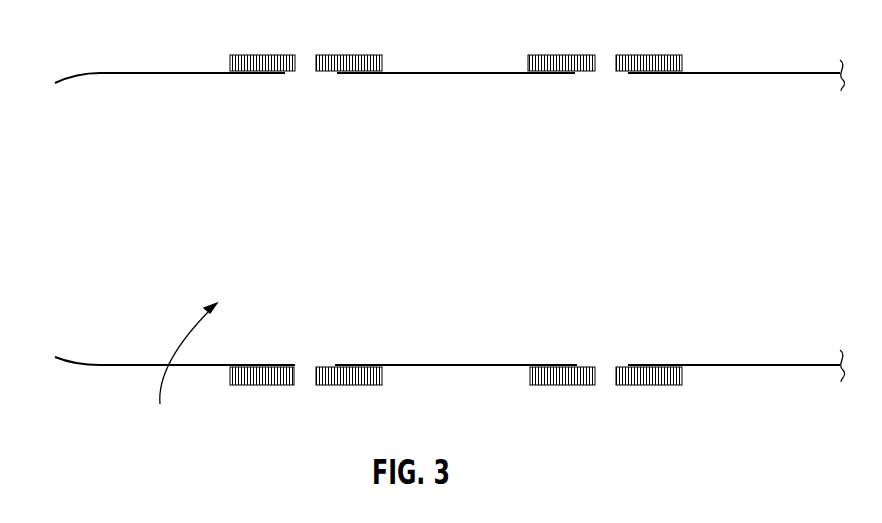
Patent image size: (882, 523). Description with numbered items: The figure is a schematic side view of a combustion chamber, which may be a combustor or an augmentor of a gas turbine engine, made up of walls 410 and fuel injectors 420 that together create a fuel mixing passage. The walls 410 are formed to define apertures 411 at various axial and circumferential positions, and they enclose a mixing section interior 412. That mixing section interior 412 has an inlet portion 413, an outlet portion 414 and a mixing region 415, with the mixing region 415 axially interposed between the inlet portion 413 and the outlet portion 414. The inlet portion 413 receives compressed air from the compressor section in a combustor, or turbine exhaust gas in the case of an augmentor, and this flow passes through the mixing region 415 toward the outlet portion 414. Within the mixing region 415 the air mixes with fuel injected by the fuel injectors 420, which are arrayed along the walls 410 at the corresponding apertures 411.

The walls 410 is at (94, 366).
The apertures 411 is at (309, 72).
The mixing section interior 412 is at (178, 371).
The inlet portion 413 is at (121, 233).
The outlet portion 414 is at (777, 233).
The mixing region 415 is at (417, 233).
The fuel injectors 420 is at (245, 54).